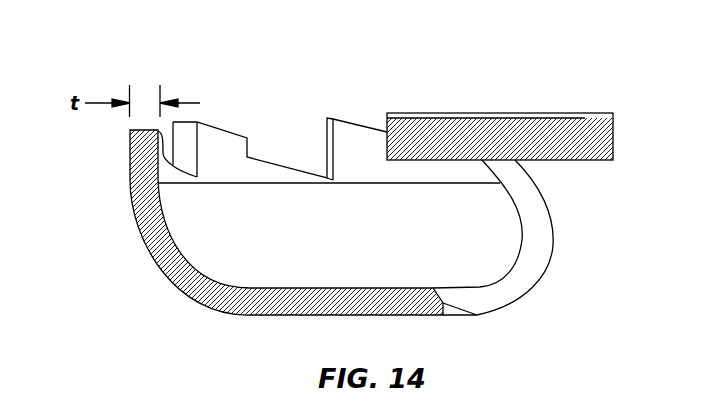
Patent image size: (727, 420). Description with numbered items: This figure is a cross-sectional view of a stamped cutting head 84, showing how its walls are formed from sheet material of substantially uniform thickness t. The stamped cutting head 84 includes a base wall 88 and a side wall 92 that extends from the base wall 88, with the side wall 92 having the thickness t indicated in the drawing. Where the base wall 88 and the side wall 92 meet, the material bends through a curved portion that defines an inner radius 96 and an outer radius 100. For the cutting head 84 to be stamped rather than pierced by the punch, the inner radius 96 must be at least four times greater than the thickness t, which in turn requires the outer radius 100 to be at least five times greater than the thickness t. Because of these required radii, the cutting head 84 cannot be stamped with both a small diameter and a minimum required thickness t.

The stamped cutting head 84 is at (437, 81).
The base wall 88 is at (313, 300).
The side wall 92 is at (128, 186).
The inner radius 96 is at (190, 255).
The outer radius 100 is at (198, 297).